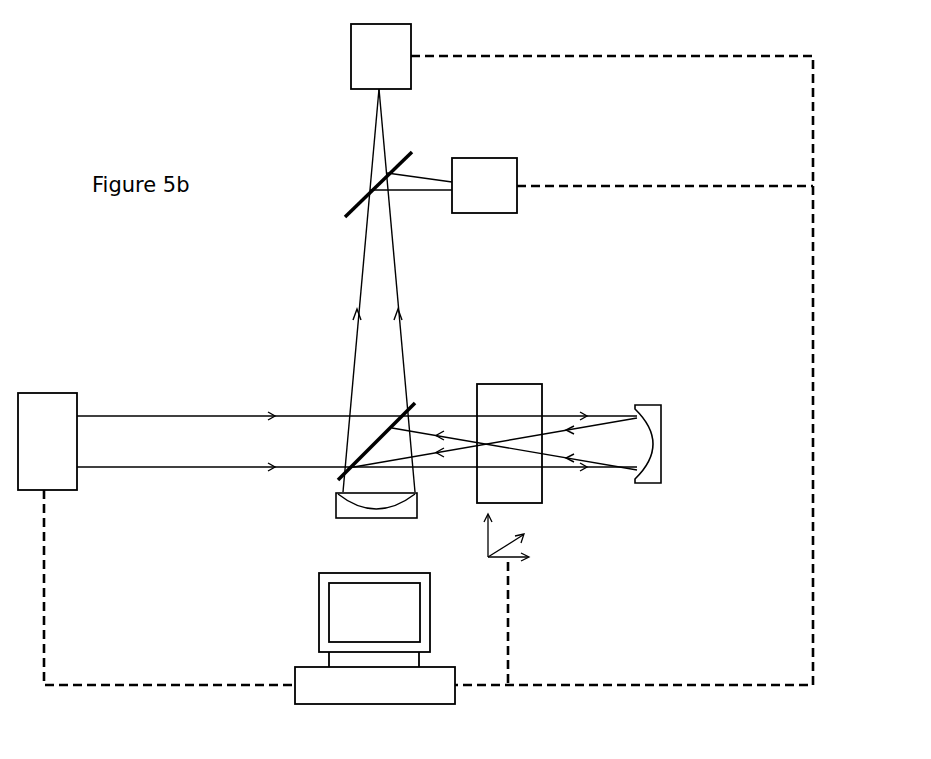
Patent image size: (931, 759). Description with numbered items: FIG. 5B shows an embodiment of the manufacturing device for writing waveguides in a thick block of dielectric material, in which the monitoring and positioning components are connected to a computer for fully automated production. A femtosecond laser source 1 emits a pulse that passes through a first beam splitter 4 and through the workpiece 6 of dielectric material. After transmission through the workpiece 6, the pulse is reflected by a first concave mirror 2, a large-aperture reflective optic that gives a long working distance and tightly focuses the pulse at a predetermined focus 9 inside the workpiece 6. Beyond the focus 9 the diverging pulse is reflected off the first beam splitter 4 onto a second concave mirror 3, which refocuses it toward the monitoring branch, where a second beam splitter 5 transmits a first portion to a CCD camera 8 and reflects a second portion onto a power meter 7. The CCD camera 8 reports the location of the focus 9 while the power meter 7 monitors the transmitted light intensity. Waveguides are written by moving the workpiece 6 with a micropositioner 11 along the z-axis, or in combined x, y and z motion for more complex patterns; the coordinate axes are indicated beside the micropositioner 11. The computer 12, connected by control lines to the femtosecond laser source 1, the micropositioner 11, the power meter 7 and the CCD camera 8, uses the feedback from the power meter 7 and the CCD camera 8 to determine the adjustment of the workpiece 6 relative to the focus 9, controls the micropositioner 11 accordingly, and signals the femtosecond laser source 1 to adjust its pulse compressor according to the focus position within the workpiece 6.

The femtosecond laser source 1 is at (47, 416).
The first concave mirror 2 is at (655, 416).
The second concave mirror 3 is at (345, 510).
The first beam splitter 4 is at (412, 406).
The second beam splitter 5 is at (350, 211).
The workpiece 6 is at (507, 391).
The power meter 7 is at (485, 205).
The CCD camera 8 is at (366, 68).
The focus 9 is at (492, 444).
The micropositioner 11 is at (540, 537).
The computer 12 is at (316, 675).